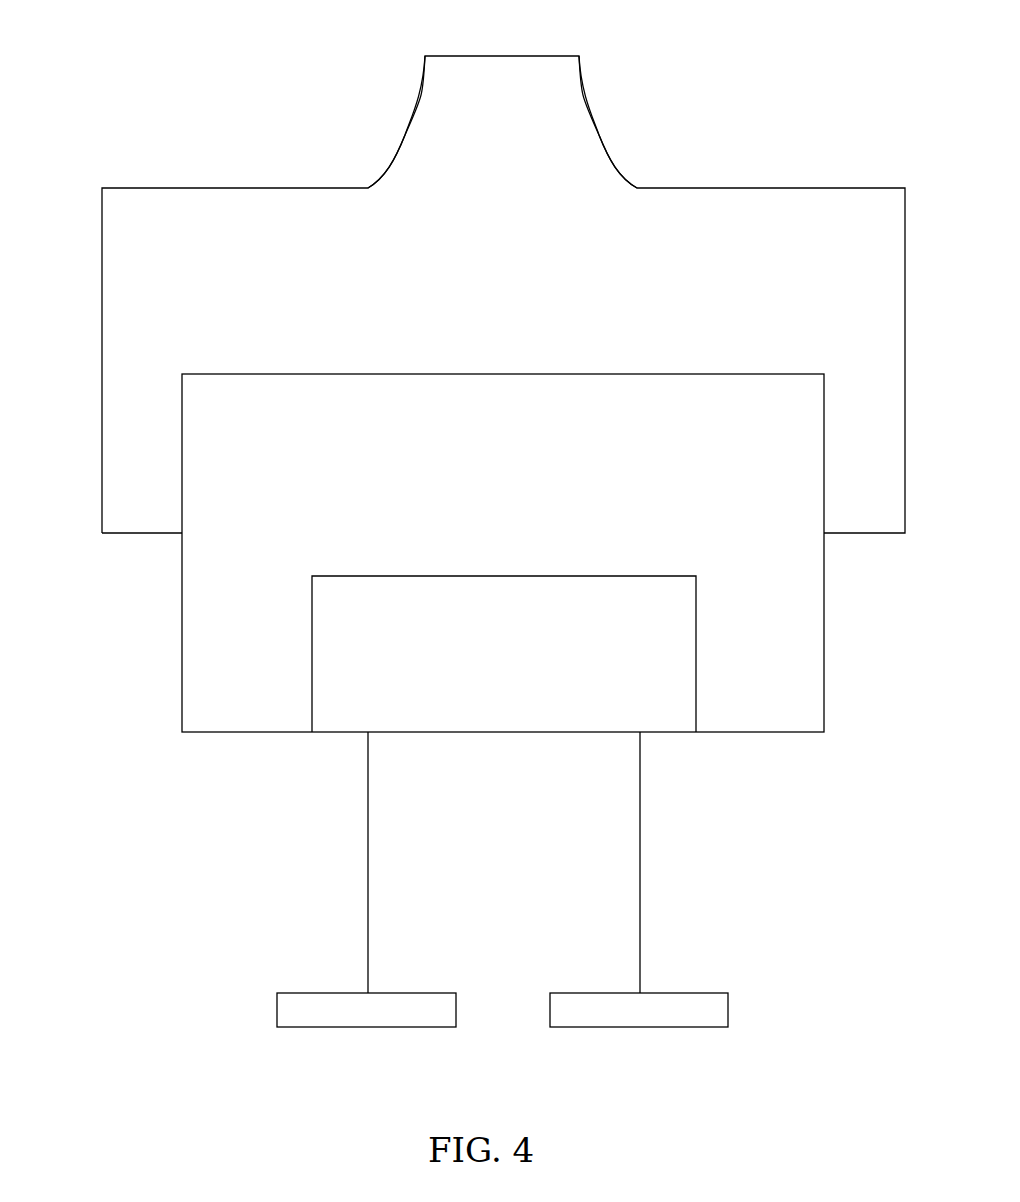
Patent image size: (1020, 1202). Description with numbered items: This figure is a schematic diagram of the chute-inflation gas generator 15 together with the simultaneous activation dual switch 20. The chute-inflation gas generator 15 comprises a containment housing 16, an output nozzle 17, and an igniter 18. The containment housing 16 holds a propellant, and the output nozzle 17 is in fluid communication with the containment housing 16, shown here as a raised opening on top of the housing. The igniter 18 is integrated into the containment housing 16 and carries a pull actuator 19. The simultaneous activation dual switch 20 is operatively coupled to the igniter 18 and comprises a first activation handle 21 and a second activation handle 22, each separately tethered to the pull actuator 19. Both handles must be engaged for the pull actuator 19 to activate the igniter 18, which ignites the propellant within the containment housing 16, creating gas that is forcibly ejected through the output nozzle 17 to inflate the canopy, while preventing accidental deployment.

The chute-inflation gas generator 15 is at (141, 150).
The containment housing 16 is at (866, 195).
The output nozzle 17 is at (548, 62).
The igniter 18 is at (265, 728).
The pull actuator 19 is at (688, 665).
The simultaneous activation dual switch 20 is at (738, 882).
The first activation handle 21 is at (293, 996).
The second activation handle 22 is at (712, 998).